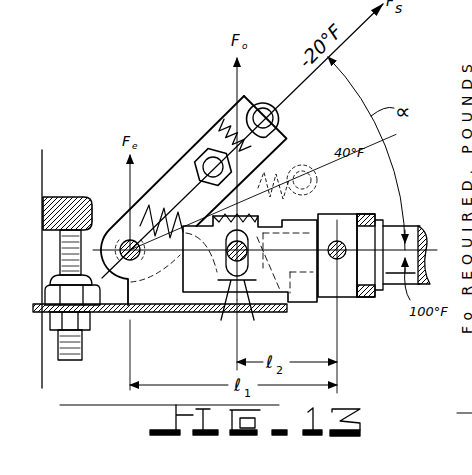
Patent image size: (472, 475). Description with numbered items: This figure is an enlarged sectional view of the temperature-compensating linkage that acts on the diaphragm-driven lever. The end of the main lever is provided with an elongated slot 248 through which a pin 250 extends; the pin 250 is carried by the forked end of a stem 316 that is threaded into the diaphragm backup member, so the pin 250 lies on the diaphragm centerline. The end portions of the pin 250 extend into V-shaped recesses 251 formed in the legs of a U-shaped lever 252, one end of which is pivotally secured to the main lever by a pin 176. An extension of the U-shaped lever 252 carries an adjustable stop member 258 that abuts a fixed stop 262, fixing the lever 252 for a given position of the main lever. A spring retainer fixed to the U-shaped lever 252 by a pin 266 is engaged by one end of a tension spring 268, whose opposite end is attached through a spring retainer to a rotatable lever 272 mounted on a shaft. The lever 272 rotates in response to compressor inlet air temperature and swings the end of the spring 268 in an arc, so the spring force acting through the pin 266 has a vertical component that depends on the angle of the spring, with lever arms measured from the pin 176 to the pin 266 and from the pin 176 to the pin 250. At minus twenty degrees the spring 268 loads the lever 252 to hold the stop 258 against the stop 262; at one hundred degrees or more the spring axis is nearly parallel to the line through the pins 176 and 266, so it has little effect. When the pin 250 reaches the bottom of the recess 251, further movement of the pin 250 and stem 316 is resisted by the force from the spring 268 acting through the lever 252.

The pin 176 is at (342, 258).
The elongated slot 248 is at (240, 297).
The pin 250 is at (230, 297).
The V-shaped recess 251 is at (285, 298).
The U-shaped lever 252 is at (170, 292).
The adjustable stop member 258 is at (94, 230).
The fixed stop 262 is at (72, 202).
The pin 266 is at (123, 300).
The tension spring 268 is at (228, 132).
The rotatable lever 272 is at (192, 167).
The stem 316 is at (263, 222).